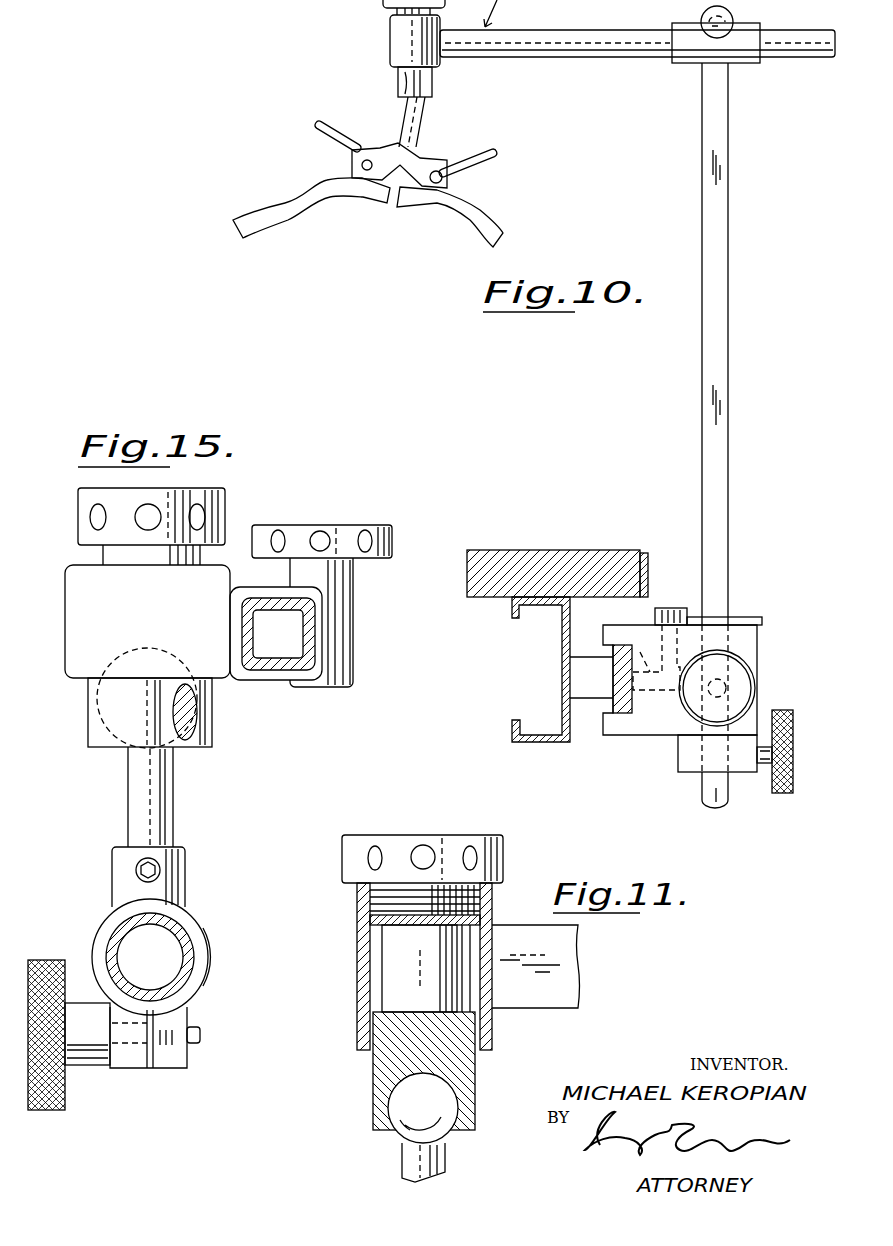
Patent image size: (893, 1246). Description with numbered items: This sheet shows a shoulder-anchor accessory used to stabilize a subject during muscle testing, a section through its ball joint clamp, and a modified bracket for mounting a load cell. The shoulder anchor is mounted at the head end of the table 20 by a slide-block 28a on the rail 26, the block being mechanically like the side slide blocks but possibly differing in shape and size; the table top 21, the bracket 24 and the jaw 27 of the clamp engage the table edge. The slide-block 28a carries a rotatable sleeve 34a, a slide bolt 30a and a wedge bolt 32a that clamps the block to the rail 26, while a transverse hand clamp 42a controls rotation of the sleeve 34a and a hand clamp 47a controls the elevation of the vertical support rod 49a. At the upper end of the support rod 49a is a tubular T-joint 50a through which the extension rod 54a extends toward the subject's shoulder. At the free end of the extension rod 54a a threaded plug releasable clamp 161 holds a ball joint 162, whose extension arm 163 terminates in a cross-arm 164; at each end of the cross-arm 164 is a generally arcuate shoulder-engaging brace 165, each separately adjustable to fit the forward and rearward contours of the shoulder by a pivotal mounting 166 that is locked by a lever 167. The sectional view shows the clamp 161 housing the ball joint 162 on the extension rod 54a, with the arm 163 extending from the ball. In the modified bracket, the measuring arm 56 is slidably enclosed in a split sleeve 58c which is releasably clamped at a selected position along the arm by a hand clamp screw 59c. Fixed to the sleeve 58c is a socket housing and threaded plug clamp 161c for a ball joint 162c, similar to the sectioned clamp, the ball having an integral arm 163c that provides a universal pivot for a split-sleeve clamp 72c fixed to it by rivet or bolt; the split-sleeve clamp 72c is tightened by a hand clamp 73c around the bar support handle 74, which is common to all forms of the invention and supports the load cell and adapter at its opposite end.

In FIG. 10, the table 20 is at (497, 597).
In FIG. 10, the table top 21 is at (563, 550).
In FIG. 10, the clamp bracket 24 is at (534, 744).
In FIG. 10, the rail 26 is at (632, 708).
In FIG. 10, the clamp jaw 27 is at (578, 672).
In FIG. 10, the slide-block 28a is at (668, 729).
In FIG. 10, the slide bolt 30a is at (663, 658).
In FIG. 10, the wedge bolt 32a is at (691, 580).
In FIG. 10, the rotatable sleeve 34a is at (798, 612).
In FIG. 10, the transverse hand clamp 42a is at (735, 677).
In FIG. 10, the hand clamp 47a is at (781, 793).
In FIG. 10, the support rod 49a is at (785, 336).
In FIG. 10, the tubular T-joint 50a is at (737, 52).
In FIG. 10, the extension rod 54a is at (541, 32).
In FIG. 11, the extension rod 54a is at (565, 974).
In FIG. 15, the measuring arm 56 is at (316, 632).
In FIG. 15, the split sleeve 58c is at (246, 681).
In FIG. 15, the hand clamp screw 59c is at (297, 528).
In FIG. 15, the split-sleeve clamp 72c is at (196, 940).
In FIG. 15, the hand clamp 73c is at (42, 960).
In FIG. 15, the bar support handle 74 is at (190, 984).
In FIG. 10, the threaded plug releasable clamp 161 is at (390, 25).
In FIG. 11, the threaded plug releasable clamp 161 is at (357, 913).
In FIG. 15, the socket housing and threaded plug clamp 161c is at (105, 556).
In FIG. 10, the ball joint 162 is at (398, 80).
In FIG. 11, the ball joint 162 is at (398, 1110).
In FIG. 15, the ball joint 162c is at (98, 711).
In FIG. 10, the extension arm 163 is at (425, 111).
In FIG. 11, the extension arm 163 is at (436, 1165).
In FIG. 15, the integral arm 163c is at (132, 800).
In FIG. 10, the cross-arm 164 is at (417, 156).
In FIG. 10, the shoulder-engaging brace 165 is at (273, 221).
In FIG. 10, the pivotal mounting 166 is at (362, 161).
In FIG. 10, the lever 167 is at (322, 127).